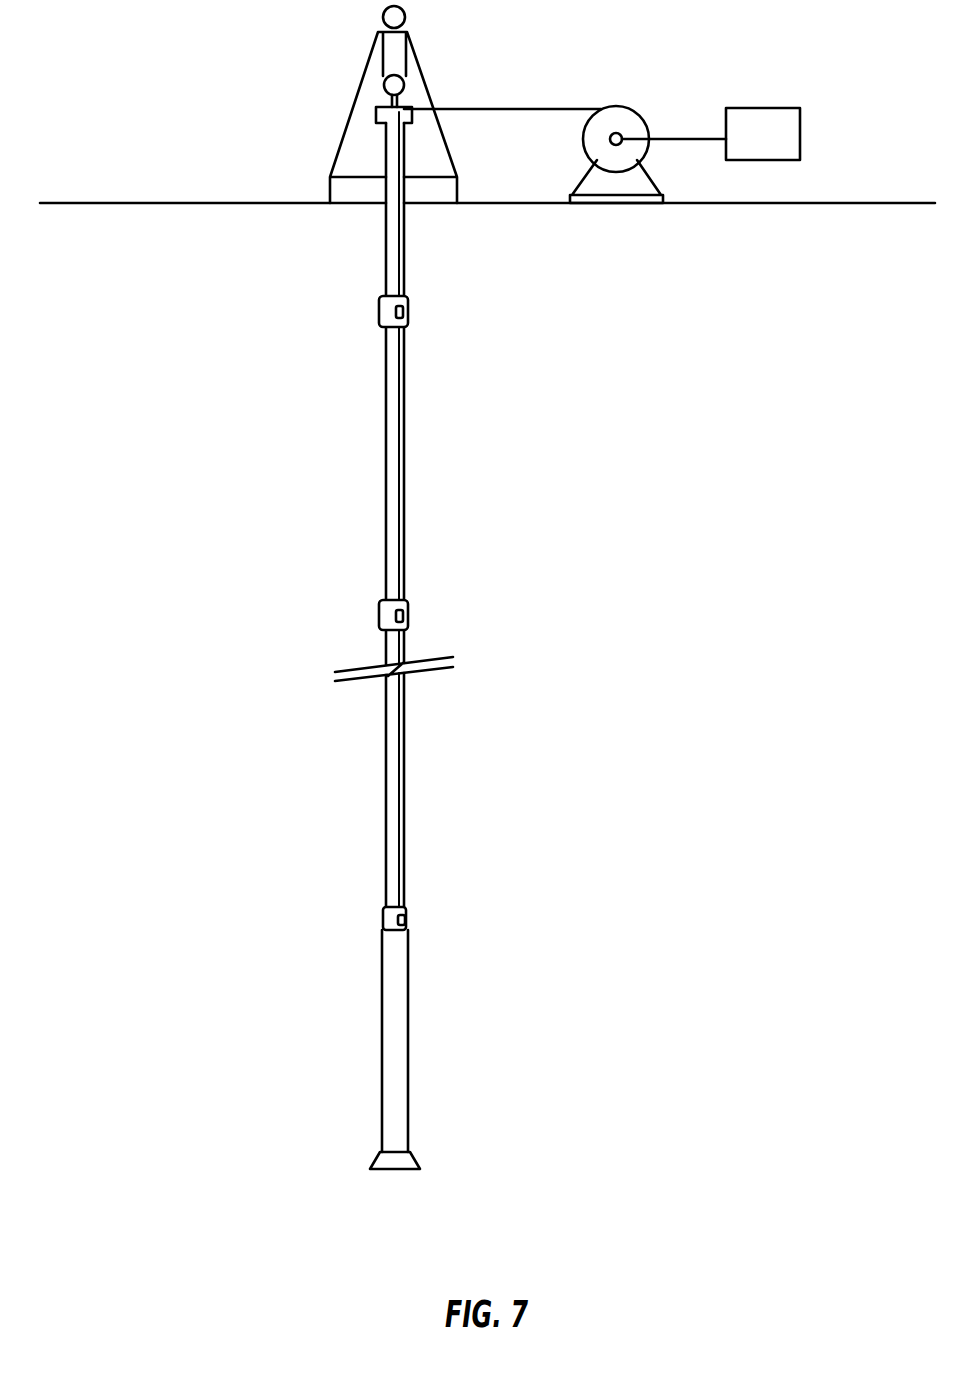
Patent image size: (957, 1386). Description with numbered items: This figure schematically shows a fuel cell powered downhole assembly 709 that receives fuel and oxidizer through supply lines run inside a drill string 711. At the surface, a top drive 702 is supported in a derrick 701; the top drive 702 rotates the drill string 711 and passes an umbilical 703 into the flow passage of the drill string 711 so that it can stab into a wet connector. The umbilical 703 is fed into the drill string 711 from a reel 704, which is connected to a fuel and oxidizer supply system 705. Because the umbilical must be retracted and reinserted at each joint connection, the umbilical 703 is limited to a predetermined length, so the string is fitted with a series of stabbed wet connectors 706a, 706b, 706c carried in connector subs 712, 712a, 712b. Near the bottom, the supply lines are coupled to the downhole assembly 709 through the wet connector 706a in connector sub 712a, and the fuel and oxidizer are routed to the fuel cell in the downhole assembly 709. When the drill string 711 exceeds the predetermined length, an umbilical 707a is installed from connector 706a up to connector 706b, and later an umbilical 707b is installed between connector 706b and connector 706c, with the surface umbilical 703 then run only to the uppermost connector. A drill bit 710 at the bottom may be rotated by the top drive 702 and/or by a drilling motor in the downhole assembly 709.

The derrick 701 is at (349, 118).
The top drive 702 is at (408, 108).
The umbilical 703 is at (530, 109).
The reel 704 is at (648, 172).
The fuel and oxidizer supply system 705 is at (762, 108).
The wet connector 706a is at (407, 918).
The wet connector 706b is at (409, 612).
The wet connector 706c is at (409, 308).
The umbilical 707a is at (404, 725).
The umbilical 707b is at (404, 462).
The downhole assembly 709 is at (408, 1002).
The drill bit 710 is at (416, 1160).
The drill string 711 is at (385, 474).
The connector sub 712 is at (379, 310).
The connector sub 712a is at (383, 918).
The connector sub 712b is at (379, 614).